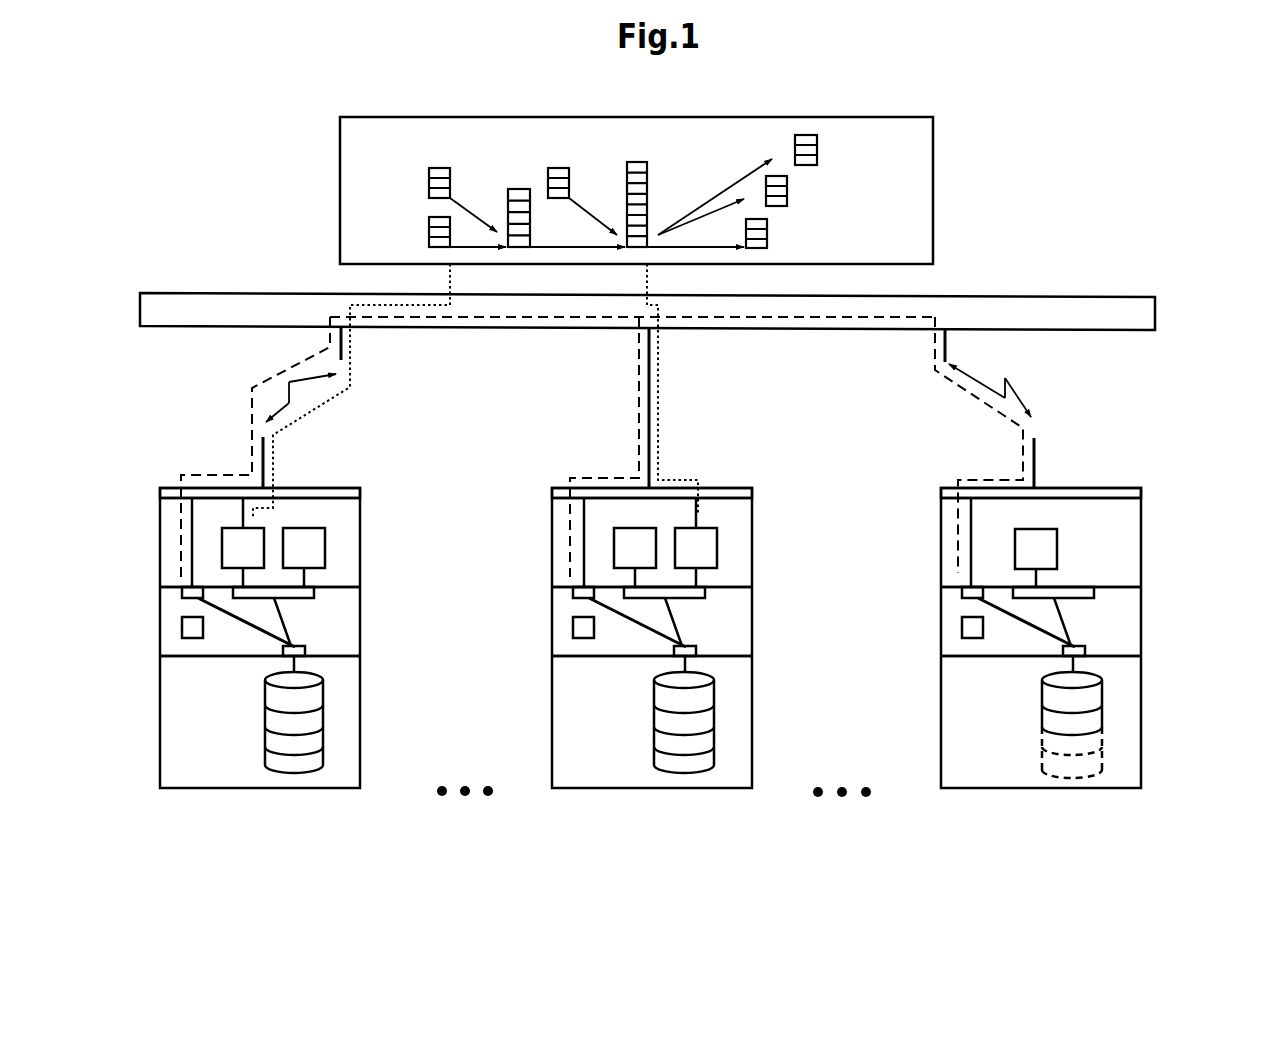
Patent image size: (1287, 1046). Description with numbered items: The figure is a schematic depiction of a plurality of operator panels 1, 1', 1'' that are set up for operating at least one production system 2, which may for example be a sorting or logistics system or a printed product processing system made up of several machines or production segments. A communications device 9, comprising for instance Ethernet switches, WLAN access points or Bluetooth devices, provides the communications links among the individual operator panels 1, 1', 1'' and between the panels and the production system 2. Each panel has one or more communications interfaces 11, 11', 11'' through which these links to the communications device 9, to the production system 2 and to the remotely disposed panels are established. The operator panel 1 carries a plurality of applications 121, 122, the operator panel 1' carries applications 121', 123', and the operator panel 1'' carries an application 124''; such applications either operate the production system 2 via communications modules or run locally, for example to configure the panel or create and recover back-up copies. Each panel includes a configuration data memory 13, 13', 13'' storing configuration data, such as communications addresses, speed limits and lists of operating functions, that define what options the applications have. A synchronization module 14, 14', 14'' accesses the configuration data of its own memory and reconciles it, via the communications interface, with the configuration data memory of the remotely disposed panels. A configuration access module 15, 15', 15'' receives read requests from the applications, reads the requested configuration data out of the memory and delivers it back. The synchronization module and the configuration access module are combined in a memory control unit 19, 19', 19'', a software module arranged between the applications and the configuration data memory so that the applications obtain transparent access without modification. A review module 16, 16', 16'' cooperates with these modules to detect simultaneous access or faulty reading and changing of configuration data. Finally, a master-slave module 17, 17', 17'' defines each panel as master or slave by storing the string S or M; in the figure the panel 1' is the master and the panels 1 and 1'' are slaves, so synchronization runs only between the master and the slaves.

The operator panel 1 is at (272, 617).
The operator panel 1' is at (667, 617).
The operator panel 1'' is at (1057, 617).
The production system 2 is at (925, 137).
The communications device 9 is at (1145, 308).
The communications interface 11 is at (223, 469).
The communications interface 11' is at (615, 469).
The communications interface 11'' is at (1003, 469).
The application 121 is at (173, 542).
The application 122 is at (313, 546).
The application 121' is at (565, 546).
The application 123' is at (763, 542).
The application 124'' is at (1130, 546).
The configuration data memory 13 is at (264, 750).
The configuration data memory 13' is at (654, 750).
The configuration data memory 13'' is at (1042, 750).
The synchronization module 14 is at (145, 610).
The synchronization module 14' is at (538, 610).
The synchronization module 14'' is at (927, 610).
The configuration access module 15 is at (335, 610).
The configuration access module 15' is at (729, 610).
The configuration access module 15'' is at (1120, 610).
The review module 16 is at (317, 648).
The review module 16' is at (712, 648).
The review module 16'' is at (1103, 648).
The master-slave module 17 is at (159, 641).
The master-slave module 17' is at (555, 641).
The master-slave module 17'' is at (941, 641).
The memory control unit 19 is at (298, 626).
The memory control unit 19' is at (693, 626).
The memory control unit 19'' is at (1084, 626).